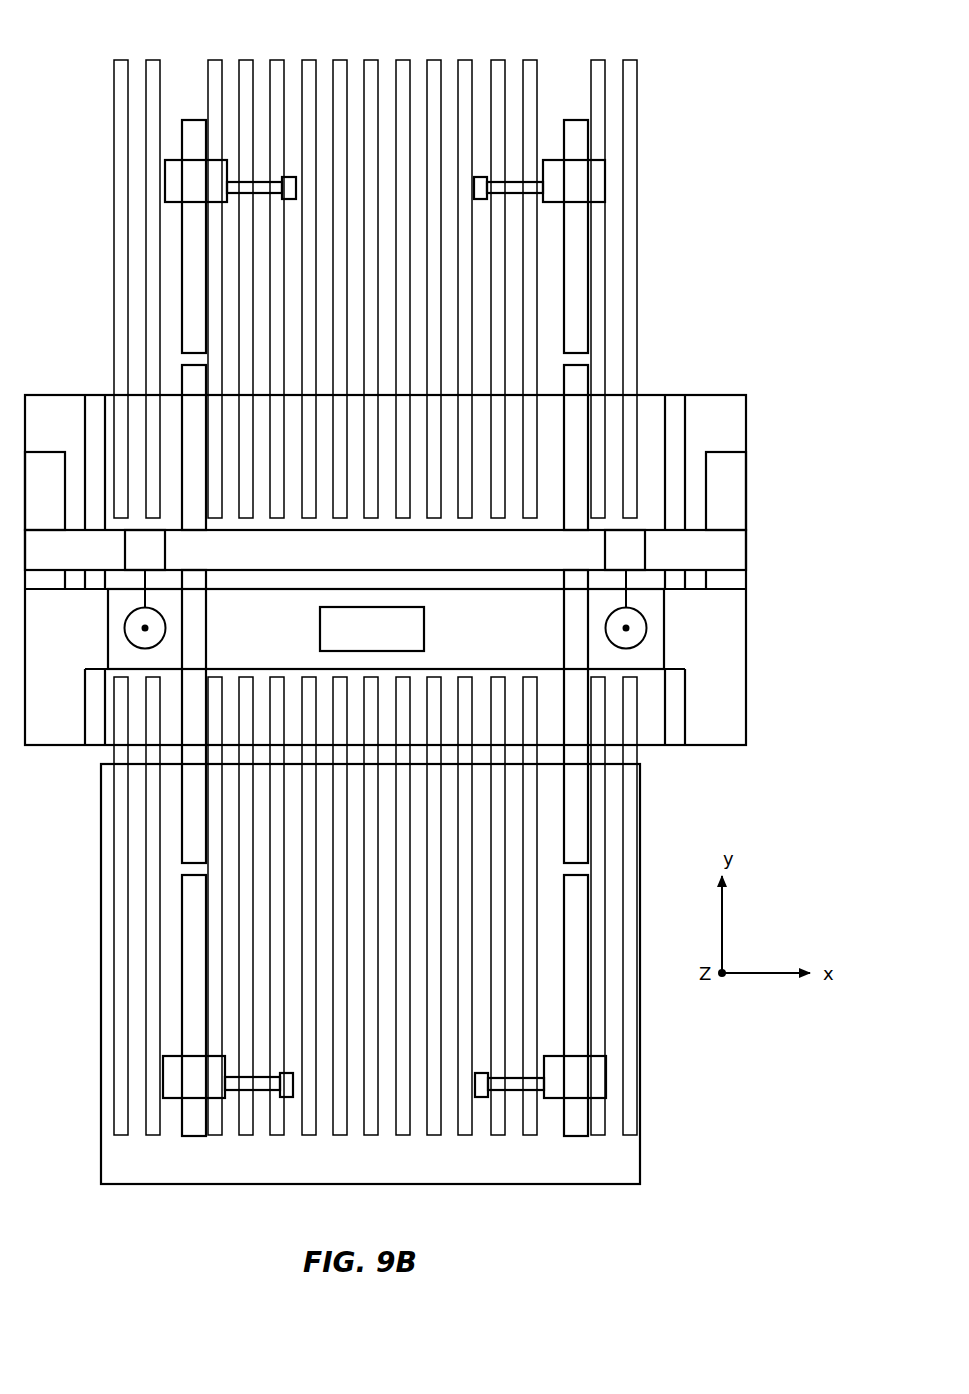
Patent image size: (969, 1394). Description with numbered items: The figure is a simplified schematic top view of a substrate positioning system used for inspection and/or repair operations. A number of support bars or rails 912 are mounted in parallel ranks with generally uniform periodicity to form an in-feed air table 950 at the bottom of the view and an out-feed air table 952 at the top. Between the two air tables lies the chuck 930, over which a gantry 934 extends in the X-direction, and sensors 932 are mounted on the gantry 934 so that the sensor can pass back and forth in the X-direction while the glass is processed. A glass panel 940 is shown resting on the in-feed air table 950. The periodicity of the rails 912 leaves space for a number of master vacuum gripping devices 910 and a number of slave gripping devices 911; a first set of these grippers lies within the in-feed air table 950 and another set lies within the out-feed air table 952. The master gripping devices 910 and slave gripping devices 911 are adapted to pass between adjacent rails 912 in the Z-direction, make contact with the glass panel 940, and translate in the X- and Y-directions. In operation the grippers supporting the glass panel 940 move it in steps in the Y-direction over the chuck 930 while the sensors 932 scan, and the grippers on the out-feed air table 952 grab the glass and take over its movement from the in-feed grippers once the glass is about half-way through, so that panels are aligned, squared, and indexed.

The master vacuum gripping device 910 is at (567, 173).
The slave gripping device 911 is at (185, 173).
The rail 912 is at (627, 150).
The chuck 930 is at (385, 570).
The sensor 932 is at (647, 628).
The gantry 934 is at (718, 550).
The glass panel 940 is at (516, 1184).
The in-feed air table 950 is at (657, 1120).
The out-feed air table 952 is at (658, 319).